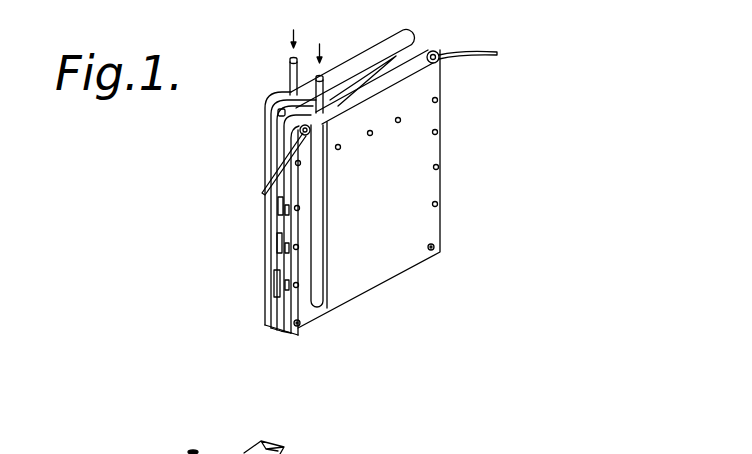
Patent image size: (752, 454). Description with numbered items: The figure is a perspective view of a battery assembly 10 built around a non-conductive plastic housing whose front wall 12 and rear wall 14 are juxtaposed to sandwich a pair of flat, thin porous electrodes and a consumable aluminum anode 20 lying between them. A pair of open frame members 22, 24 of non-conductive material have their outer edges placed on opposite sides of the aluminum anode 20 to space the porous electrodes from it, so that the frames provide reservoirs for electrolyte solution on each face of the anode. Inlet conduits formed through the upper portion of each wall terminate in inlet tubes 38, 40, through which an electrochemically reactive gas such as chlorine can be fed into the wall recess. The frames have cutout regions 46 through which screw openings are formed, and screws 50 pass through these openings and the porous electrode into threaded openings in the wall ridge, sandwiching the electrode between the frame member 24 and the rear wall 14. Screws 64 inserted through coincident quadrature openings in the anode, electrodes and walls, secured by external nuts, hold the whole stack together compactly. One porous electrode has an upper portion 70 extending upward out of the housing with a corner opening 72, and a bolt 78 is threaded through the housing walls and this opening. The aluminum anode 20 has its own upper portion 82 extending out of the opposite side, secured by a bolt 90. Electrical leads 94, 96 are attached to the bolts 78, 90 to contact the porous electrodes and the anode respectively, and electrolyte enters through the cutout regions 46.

The battery assembly 10 is at (462, 165).
The front wall 12 is at (424, 218).
The rear wall 14 is at (267, 215).
The consumable aluminum anode 20 is at (283, 152).
The open frame member 22 is at (281, 315).
The open frame member 24 is at (270, 322).
The inlet tube 38 is at (289, 70).
The inlet tube 40 is at (327, 90).
The cutout regions 46 is at (275, 224).
The screws 50 is at (275, 260).
The screws 64 is at (433, 252).
The upper portion 70 is at (397, 58).
The opening 72 is at (405, 49).
The bolt 78 is at (436, 64).
The upper portion 82 is at (303, 112).
The bolt 90 is at (308, 140).
The electrical lead 94 is at (494, 52).
The electrical lead 96 is at (265, 186).